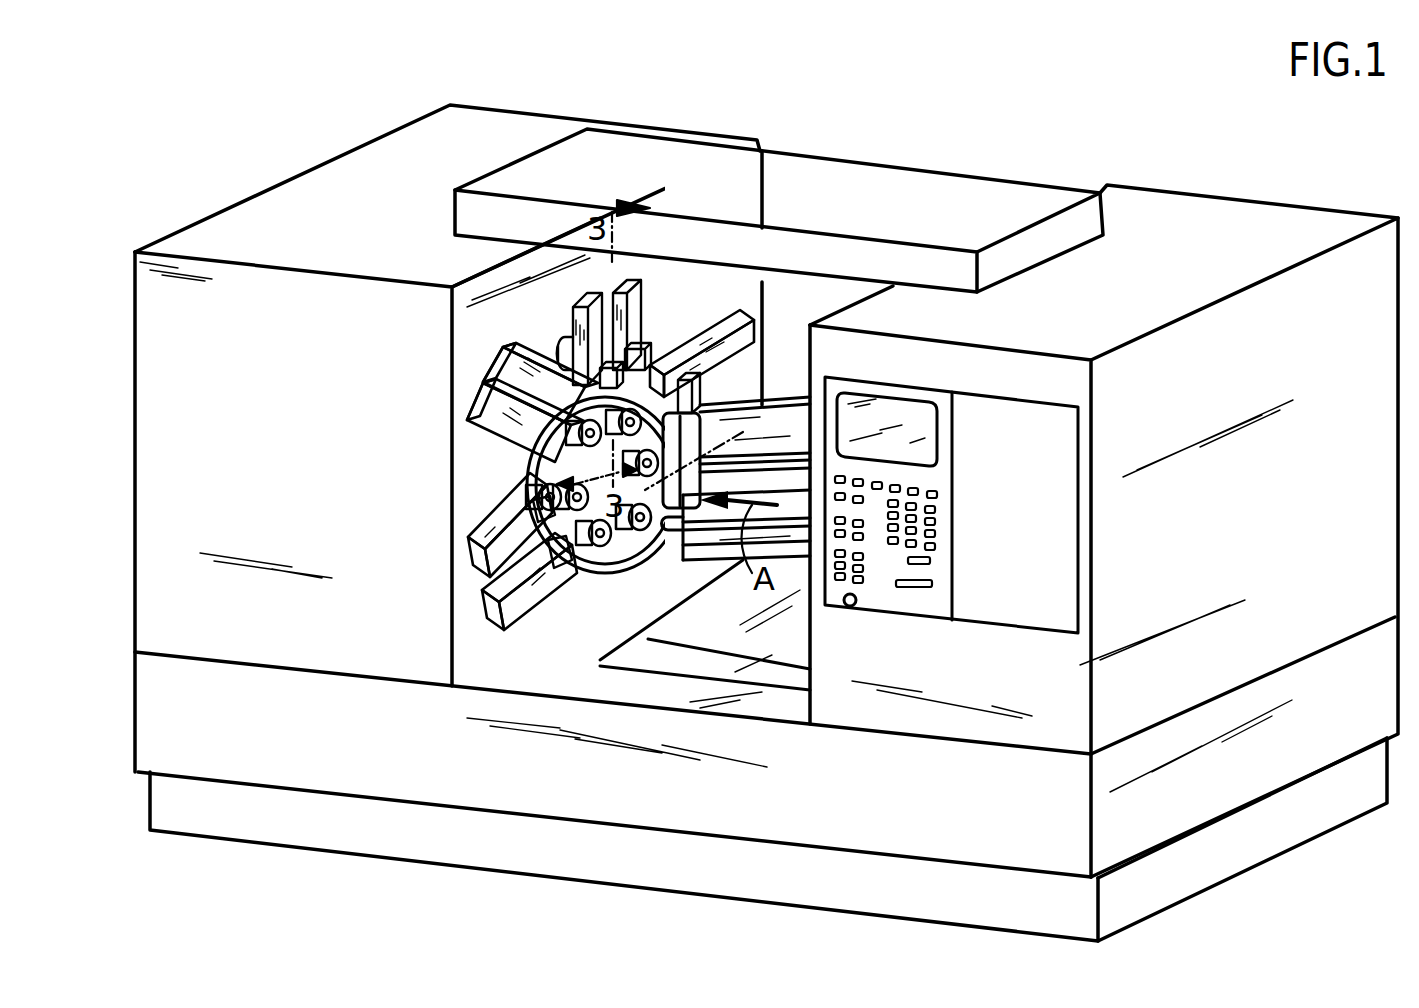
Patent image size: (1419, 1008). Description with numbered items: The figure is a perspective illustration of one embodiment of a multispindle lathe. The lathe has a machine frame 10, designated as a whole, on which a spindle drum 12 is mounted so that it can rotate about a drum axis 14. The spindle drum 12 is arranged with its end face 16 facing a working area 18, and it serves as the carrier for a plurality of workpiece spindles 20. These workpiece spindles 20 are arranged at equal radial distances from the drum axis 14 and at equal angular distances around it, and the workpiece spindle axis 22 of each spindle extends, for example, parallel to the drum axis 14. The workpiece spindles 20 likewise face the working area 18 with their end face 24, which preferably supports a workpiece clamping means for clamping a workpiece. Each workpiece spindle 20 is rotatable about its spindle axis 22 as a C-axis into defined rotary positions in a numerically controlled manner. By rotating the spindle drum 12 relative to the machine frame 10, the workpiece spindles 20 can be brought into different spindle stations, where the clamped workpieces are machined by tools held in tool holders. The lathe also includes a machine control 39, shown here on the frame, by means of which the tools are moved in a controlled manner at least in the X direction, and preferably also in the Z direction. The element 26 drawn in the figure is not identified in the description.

The machine frame 10 is at (240, 792).
The spindle drum 12 is at (612, 563).
The drum axis 14 is at (743, 432).
The end face 16 is at (640, 552).
The working area 18 is at (723, 587).
The workpiece spindles 20 is at (530, 472).
The workpiece spindle axis 22 is at (580, 520).
The end face 24 is at (487, 386).
The tool 26 is at (467, 421).
The machine control 39 is at (935, 606).